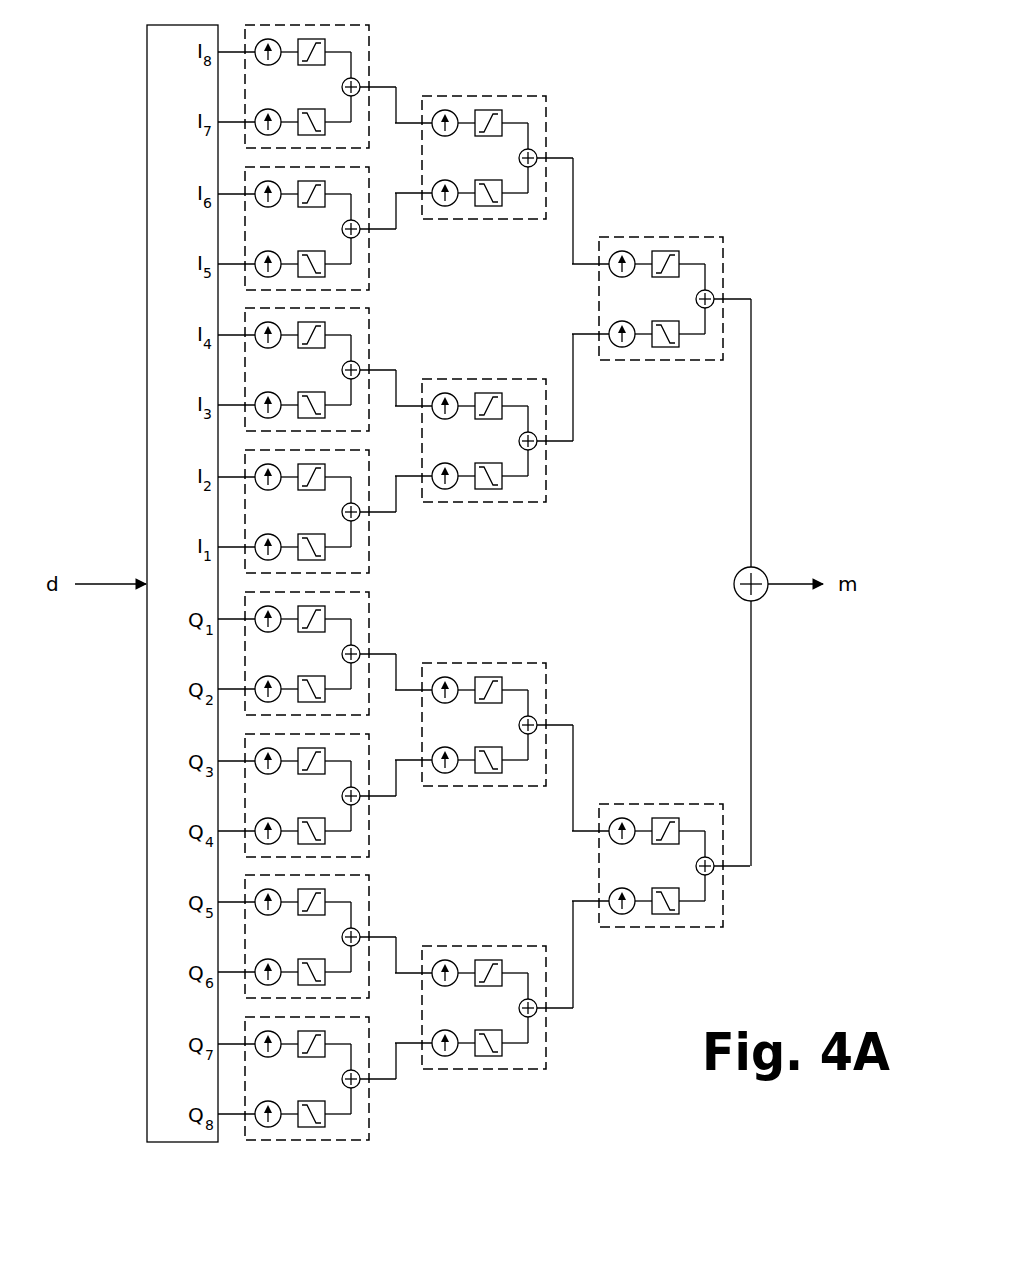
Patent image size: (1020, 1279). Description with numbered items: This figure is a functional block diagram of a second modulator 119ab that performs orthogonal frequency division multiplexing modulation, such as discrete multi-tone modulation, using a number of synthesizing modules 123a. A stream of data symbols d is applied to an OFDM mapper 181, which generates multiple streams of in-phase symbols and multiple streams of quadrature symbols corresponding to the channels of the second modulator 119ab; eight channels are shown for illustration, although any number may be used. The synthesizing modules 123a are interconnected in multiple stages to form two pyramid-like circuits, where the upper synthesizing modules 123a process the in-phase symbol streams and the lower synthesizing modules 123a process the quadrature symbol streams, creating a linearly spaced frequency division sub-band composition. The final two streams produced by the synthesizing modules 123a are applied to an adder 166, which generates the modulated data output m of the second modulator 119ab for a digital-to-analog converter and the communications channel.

The OFDM mapper 181 is at (143, 254).
The synthesizing module 123a is at (375, 64).
The second modulator 119ab is at (663, 92).
The adder 166 is at (738, 565).